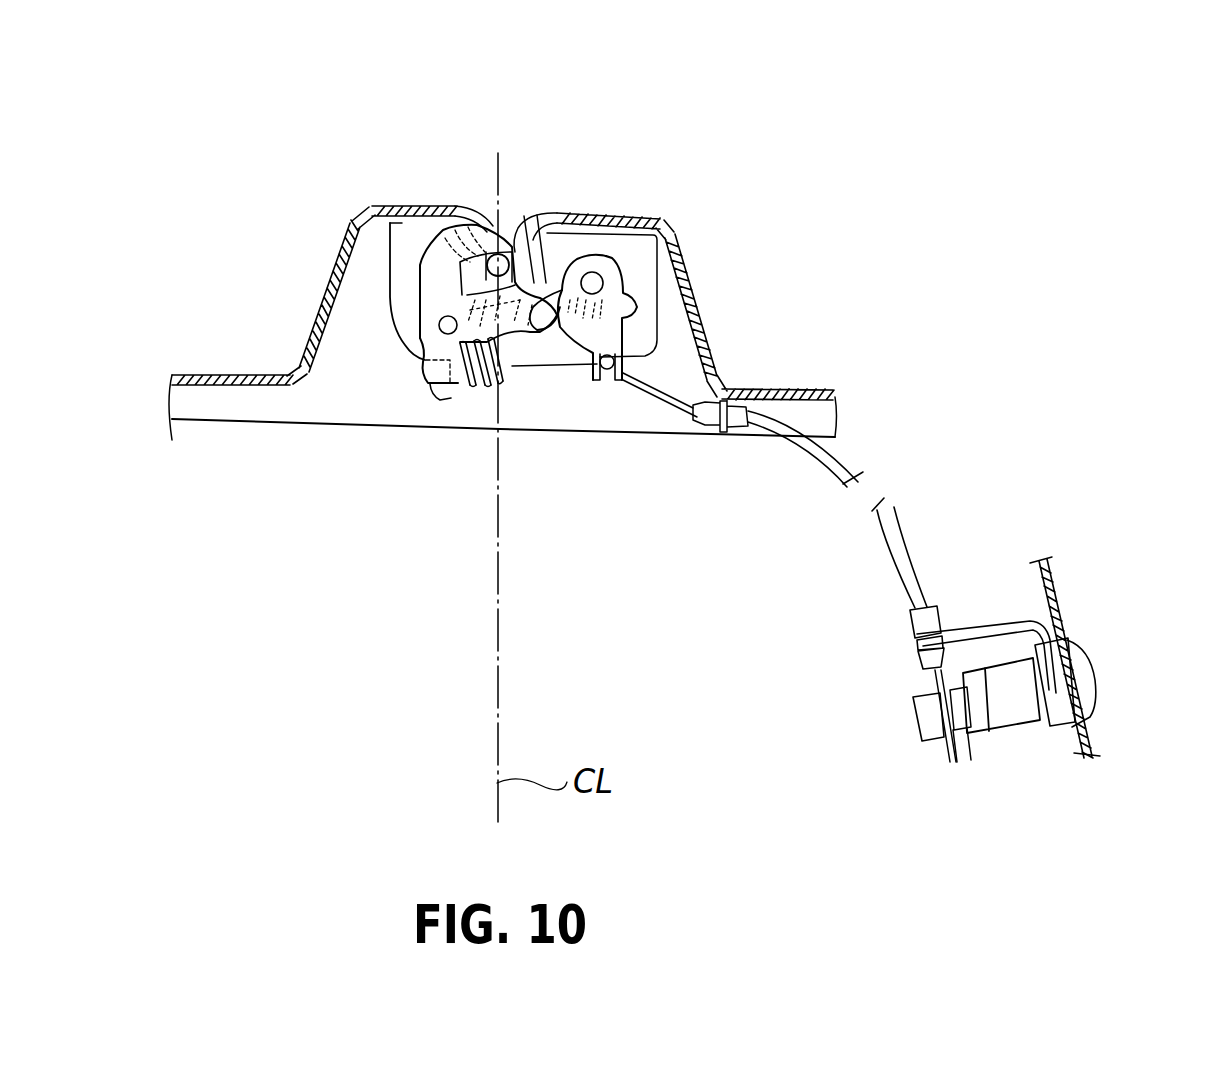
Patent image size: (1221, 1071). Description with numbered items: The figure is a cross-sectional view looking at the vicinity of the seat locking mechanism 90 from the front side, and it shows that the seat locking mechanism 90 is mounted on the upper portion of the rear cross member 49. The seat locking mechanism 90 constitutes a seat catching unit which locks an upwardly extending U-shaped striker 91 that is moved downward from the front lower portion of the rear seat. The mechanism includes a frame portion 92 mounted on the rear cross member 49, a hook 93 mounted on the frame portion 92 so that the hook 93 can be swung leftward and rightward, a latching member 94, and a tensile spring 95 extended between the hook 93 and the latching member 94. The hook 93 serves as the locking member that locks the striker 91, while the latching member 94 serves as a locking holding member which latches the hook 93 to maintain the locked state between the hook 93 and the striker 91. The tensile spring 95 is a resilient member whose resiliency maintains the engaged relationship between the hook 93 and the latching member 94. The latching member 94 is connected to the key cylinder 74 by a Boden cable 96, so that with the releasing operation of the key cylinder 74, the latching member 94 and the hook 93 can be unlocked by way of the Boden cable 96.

The rear cross member 49 is at (233, 412).
The key cylinder 74 is at (1085, 680).
The seat locking mechanism 90 is at (742, 171).
The striker 91 is at (488, 225).
The frame portion 92 is at (397, 261).
The hook 93 is at (437, 297).
The latching member 94 is at (625, 336).
The tensile spring 95 is at (483, 397).
The Boden cable 96 is at (897, 520).